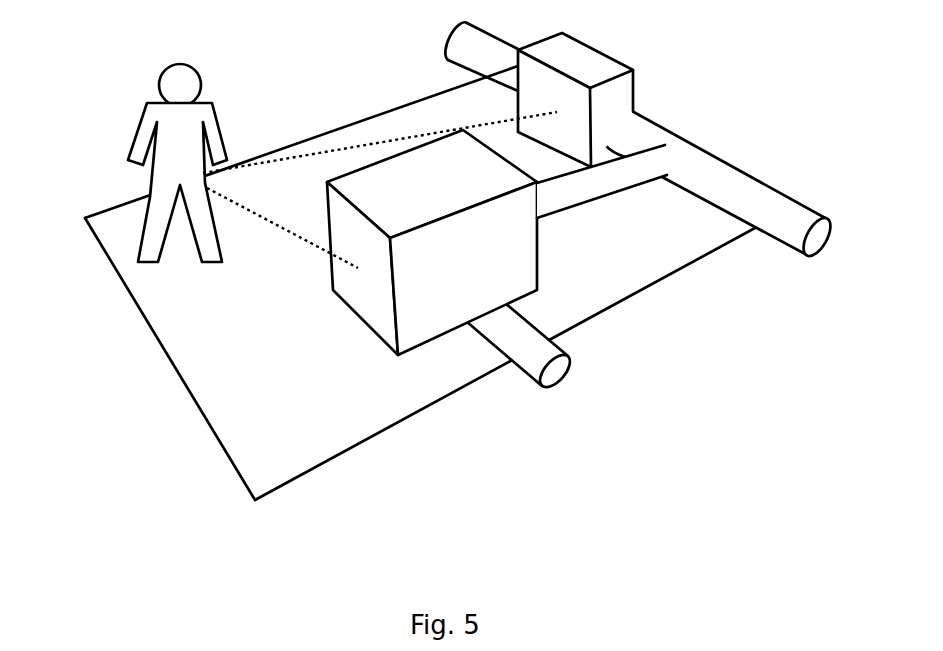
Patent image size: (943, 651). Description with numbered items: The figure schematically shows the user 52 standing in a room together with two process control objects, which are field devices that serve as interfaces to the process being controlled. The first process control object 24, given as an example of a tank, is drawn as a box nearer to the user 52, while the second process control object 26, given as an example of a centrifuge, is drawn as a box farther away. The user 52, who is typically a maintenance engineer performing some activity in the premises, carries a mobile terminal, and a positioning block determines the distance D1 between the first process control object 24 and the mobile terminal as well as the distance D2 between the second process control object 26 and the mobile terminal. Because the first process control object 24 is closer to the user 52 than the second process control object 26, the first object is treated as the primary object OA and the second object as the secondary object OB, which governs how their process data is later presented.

The user 52 is at (130, 165).
The first process control object 24 is at (373, 303).
The second process control object 26 is at (613, 60).
The distance between the first process control object and the mobile terminal D1 is at (282, 228).
The distance between the second process control object and the mobile terminal D2 is at (380, 136).